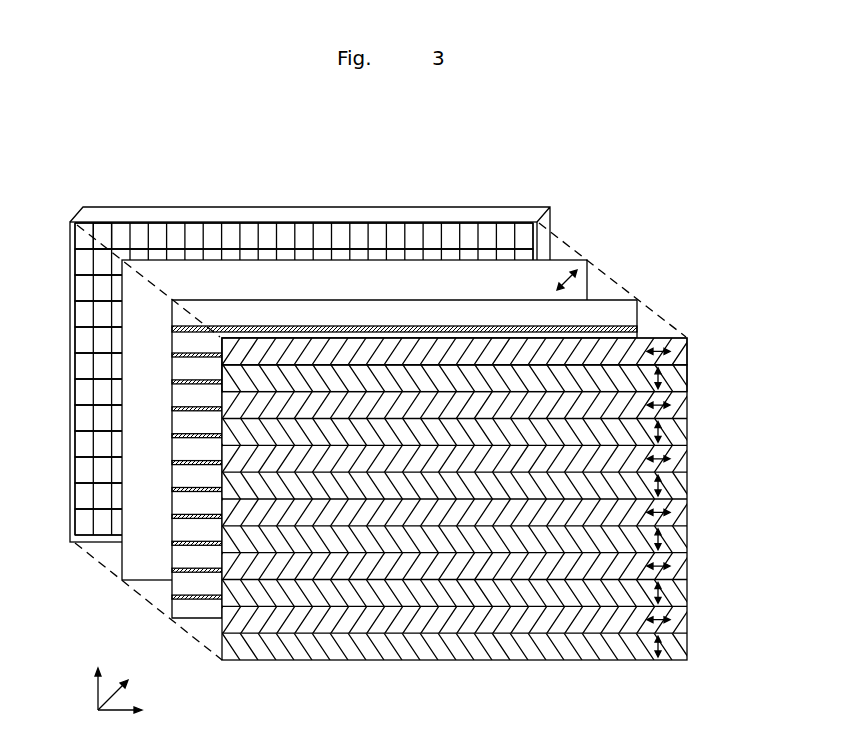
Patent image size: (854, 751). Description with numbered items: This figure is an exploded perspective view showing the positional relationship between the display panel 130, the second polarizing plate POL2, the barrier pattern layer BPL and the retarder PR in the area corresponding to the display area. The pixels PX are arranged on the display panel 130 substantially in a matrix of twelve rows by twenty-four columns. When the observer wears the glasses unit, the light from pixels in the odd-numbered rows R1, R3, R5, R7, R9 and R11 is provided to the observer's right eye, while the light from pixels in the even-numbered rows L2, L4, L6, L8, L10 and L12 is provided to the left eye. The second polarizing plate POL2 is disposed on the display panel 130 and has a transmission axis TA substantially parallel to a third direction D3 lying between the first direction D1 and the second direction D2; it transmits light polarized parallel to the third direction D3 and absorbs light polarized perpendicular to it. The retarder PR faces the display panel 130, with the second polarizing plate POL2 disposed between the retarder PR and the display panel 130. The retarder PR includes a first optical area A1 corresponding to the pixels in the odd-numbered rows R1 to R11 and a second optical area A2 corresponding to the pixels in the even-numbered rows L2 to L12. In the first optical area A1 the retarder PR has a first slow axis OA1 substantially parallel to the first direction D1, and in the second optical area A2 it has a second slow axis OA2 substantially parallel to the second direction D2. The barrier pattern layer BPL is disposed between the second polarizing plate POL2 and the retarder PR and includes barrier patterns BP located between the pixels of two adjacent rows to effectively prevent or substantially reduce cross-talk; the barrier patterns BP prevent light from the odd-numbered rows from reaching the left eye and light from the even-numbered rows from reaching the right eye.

The display panel 130 is at (522, 207).
The pixels PX is at (102, 224).
The odd-numbered row R1 is at (289, 237).
The even-numbered row L2 is at (289, 263).
The odd-numbered row R3 is at (289, 289).
The even-numbered row L4 is at (289, 315).
The odd-numbered row R5 is at (289, 341).
The even-numbered row L6 is at (289, 367).
The odd-numbered row R7 is at (289, 392).
The even-numbered row L8 is at (289, 418).
The odd-numbered row R9 is at (289, 444).
The even-numbered row L10 is at (284, 470).
The odd-numbered row R11 is at (284, 496).
The even-numbered row L12 is at (284, 522).
The second polarizing plate POL2 is at (583, 283).
The transmission axis TA is at (575, 272).
The barrier pattern layer BPL is at (633, 307).
The barrier patterns BP is at (633, 328).
The retarder PR is at (741, 340).
The first optical area A1 is at (687, 345).
The second optical area A2 is at (687, 383).
The first slow axis OA1 is at (662, 451).
The second slow axis OA2 is at (662, 483).
The first direction D1 is at (132, 710).
The second direction D2 is at (97, 677).
The third direction D3 is at (123, 686).